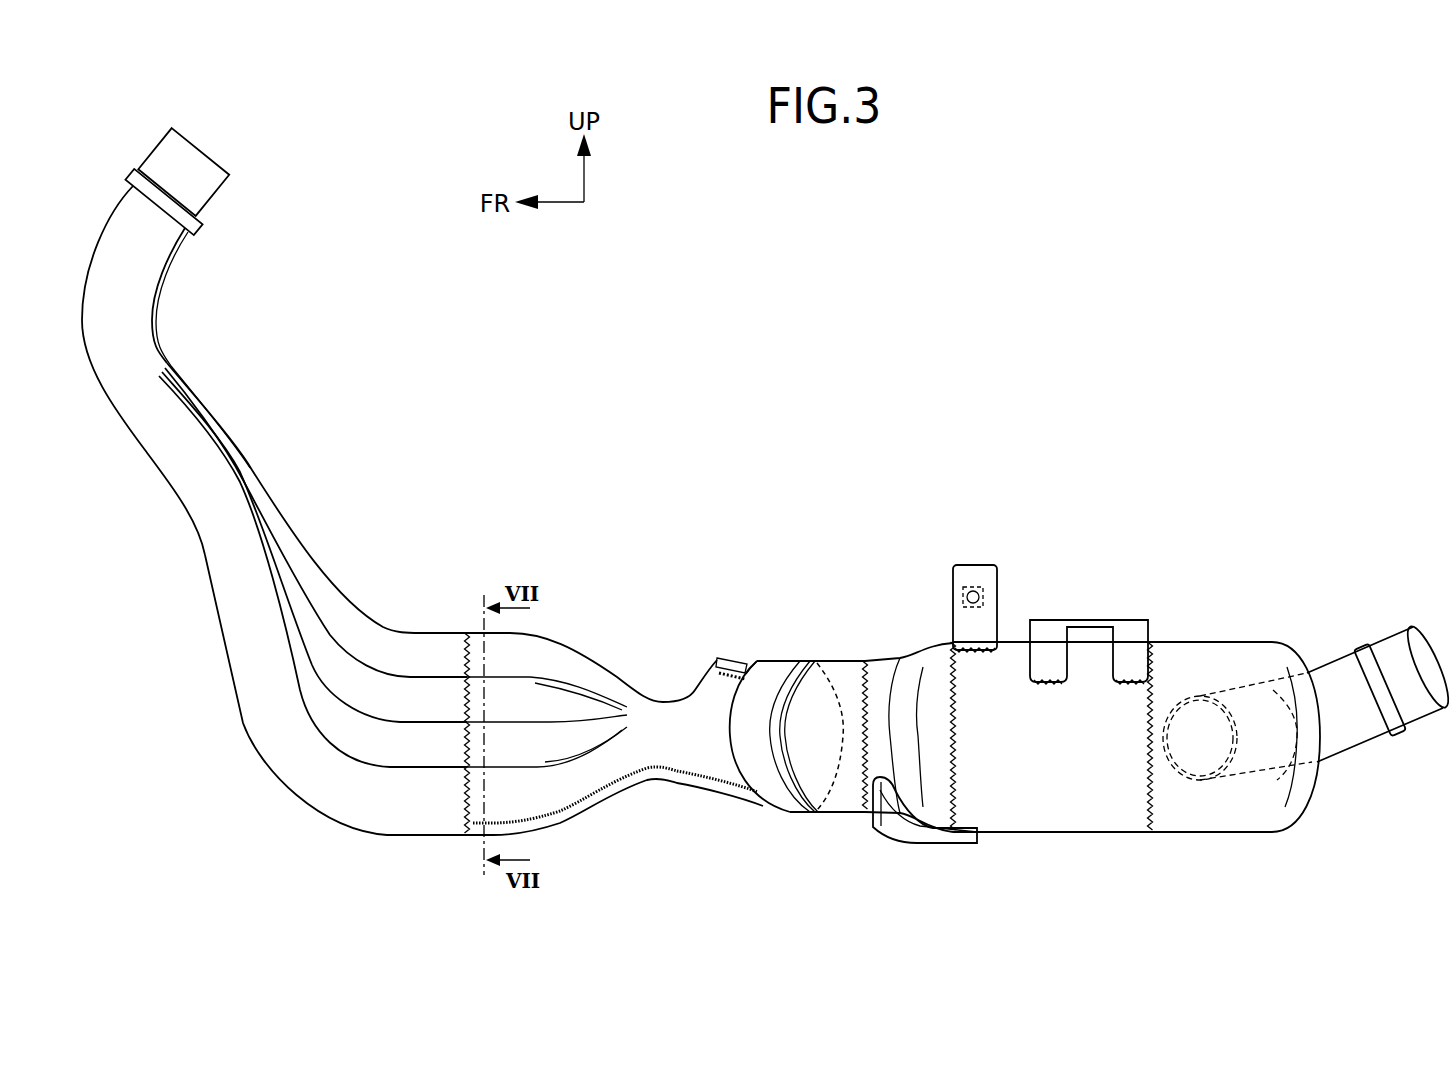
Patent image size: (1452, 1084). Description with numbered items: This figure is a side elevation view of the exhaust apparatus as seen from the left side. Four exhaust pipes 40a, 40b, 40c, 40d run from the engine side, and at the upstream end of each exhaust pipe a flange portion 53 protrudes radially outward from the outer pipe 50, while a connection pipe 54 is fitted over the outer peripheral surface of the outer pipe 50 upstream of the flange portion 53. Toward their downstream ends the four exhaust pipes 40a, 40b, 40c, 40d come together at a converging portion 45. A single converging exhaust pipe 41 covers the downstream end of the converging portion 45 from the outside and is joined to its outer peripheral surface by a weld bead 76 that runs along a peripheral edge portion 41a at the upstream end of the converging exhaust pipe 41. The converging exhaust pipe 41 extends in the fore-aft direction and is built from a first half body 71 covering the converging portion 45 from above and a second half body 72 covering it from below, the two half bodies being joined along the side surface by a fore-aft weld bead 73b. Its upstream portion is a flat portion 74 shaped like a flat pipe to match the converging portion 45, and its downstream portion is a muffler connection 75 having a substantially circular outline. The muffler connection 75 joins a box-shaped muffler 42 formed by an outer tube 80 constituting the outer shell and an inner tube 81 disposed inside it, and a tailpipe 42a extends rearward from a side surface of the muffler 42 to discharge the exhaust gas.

The exhaust pipe 40a is at (397, 627).
The exhaust pipe 40b is at (413, 673).
The exhaust pipe 40c is at (387, 748).
The exhaust pipe 40d is at (400, 837).
The converging exhaust pipe 41 is at (587, 737).
The peripheral edge portion 41a is at (463, 800).
The muffler 42 is at (1177, 640).
The tailpipe 42a is at (1390, 636).
The converging portion 45 is at (453, 628).
The outer pipe 50 is at (317, 613).
The flange portion 53 is at (132, 170).
The connection pipe 54 is at (168, 132).
The first half body 71 is at (668, 713).
The second half body 72 is at (663, 790).
The weld bead 73b is at (693, 787).
The flat portion 74 is at (540, 650).
The muffler connection 75 is at (753, 710).
The weld bead 76 is at (468, 832).
The outer tube 80 is at (1163, 640).
The inner tube 81 is at (850, 658).